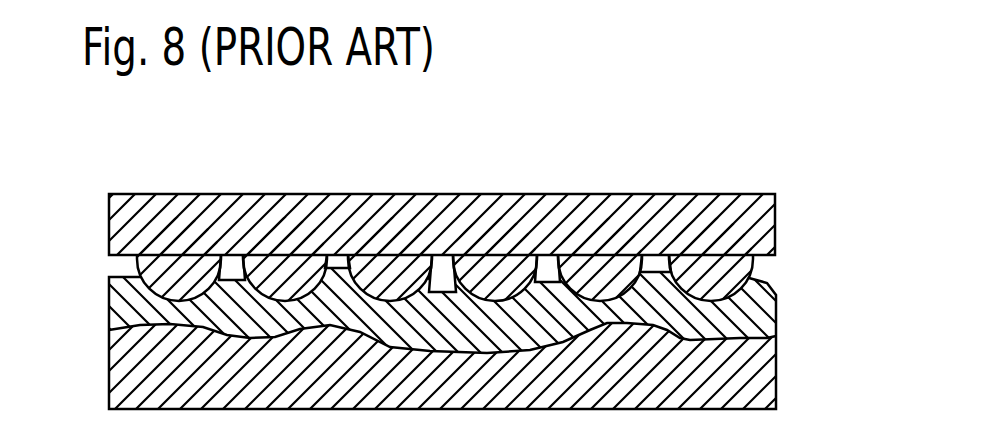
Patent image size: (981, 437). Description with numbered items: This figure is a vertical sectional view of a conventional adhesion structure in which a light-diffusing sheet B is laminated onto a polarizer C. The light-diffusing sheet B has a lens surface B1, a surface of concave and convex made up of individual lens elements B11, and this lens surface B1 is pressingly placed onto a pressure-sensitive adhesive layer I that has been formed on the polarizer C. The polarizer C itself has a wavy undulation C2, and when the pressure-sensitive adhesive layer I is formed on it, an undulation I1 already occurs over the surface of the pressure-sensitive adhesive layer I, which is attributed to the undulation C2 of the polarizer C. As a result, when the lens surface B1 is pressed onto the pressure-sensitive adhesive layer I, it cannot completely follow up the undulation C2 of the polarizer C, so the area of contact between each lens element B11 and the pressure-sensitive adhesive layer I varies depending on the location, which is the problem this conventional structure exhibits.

The light-diffusing sheet B is at (147, 200).
The lens surface B1 is at (117, 258).
The lens element B11 is at (155, 278).
The pressure-sensitive adhesive layer I is at (772, 305).
The undulation I1 is at (550, 282).
The polarizer C is at (767, 366).
The undulation C2 is at (658, 323).